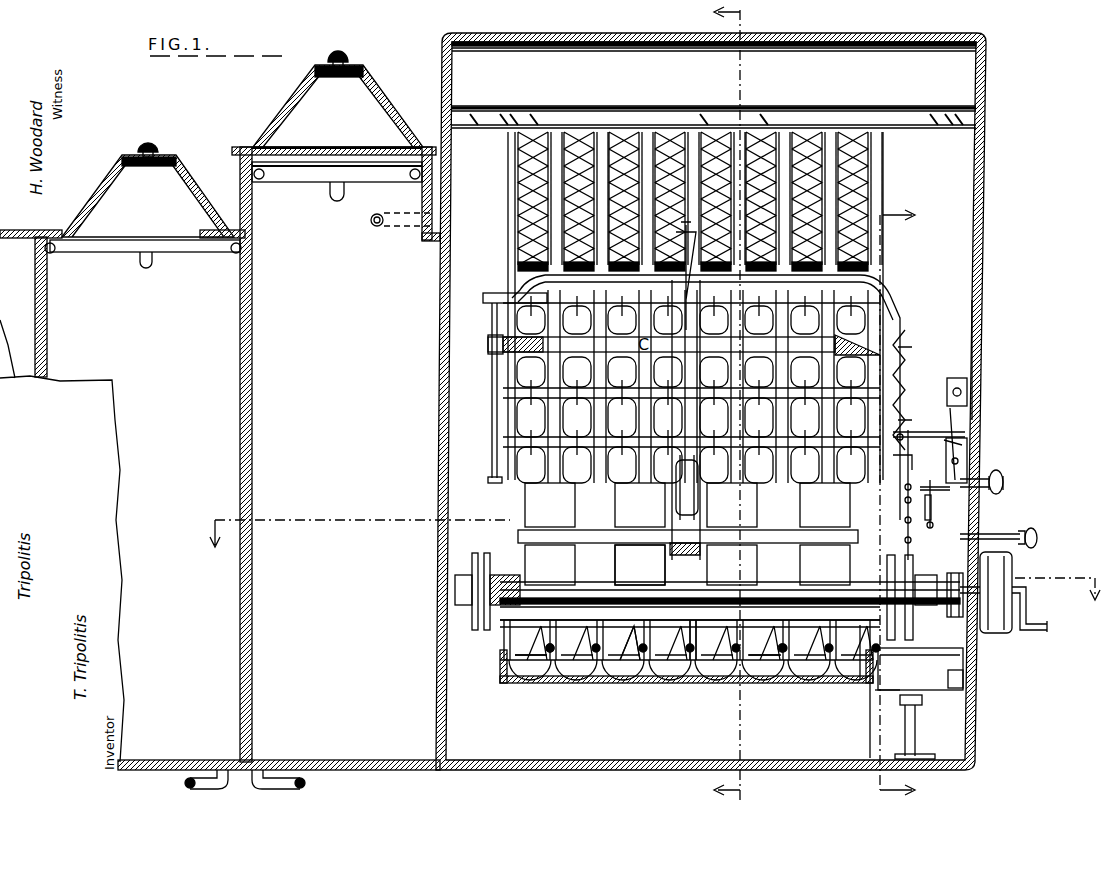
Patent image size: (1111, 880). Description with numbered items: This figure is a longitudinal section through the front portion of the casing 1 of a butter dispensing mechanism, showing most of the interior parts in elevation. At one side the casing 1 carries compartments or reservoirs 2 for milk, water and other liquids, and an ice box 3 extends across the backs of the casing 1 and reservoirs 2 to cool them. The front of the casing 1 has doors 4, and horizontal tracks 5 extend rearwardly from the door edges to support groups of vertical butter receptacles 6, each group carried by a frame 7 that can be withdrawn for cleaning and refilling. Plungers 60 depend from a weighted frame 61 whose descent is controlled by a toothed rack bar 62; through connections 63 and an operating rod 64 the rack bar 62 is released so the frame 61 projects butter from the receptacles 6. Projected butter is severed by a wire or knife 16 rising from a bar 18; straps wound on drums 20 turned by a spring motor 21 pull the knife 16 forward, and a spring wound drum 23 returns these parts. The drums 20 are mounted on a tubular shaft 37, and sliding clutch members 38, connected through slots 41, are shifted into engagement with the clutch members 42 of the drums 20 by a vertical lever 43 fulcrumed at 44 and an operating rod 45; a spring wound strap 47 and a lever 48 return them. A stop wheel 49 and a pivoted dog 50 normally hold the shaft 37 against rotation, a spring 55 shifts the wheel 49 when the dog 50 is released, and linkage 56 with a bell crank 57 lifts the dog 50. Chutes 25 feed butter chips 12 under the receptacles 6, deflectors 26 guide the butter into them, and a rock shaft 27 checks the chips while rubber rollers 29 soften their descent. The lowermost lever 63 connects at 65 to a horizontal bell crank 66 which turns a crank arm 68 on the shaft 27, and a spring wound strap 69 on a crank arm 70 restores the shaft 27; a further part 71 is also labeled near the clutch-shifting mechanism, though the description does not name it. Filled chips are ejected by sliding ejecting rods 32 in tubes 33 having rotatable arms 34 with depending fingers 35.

The casing 1 is at (975, 375).
The compartments or reservoirs 2 is at (370, 404).
The ice box 3 is at (648, 574).
The doors 4 is at (906, 506).
The horizontal tracks 5 is at (520, 531).
The butter receptacles 6 is at (694, 534).
The frame 7 is at (550, 534).
The butter chips 12 is at (862, 268).
The wire or knife 16 is at (640, 565).
The bar 18 is at (672, 620).
The drums 20 is at (468, 612).
The spring motor 21 is at (1008, 575).
The spring wound drum 23 is at (692, 455).
The chutes 25 is at (835, 218).
The deflectors 26 is at (532, 662).
The rock shaft 27 is at (884, 650).
The rubber rollers 29 is at (532, 400).
The sliding ejecting rods 32 is at (575, 660).
The tubes 33 is at (552, 662).
The rotatable arms 34 is at (522, 648).
The depending fingers 35 is at (512, 672).
The tubular shaft 37 is at (628, 616).
The sliding clutch members 38 is at (472, 578).
The slots 41 is at (468, 590).
The clutch members of the drums 42 is at (470, 600).
The vertical lever 43 is at (982, 470).
The fulcrum 44 is at (972, 506).
The operating rod 45 is at (1003, 476).
The spring wound strap 47 is at (962, 410).
The lever 48 is at (958, 432).
The stop wheel 49 is at (992, 605).
The pivoted dog 50 is at (1030, 536).
The spring 55 is at (1024, 592).
The linkage 56 is at (982, 526).
The bell crank 57 is at (1004, 486).
The plungers 60 is at (548, 414).
The weighted frame 61 is at (530, 352).
The toothed rack bar 62 is at (900, 378).
The connections or levers 63 is at (920, 488).
The operating rod 64 is at (1040, 545).
The connection 65 is at (920, 695).
The horizontal bell crank 66 is at (918, 715).
The crank arm 68 is at (866, 690).
The spring wound strap 69 is at (920, 740).
The crank arm 70 is at (887, 721).
The bracket 71 is at (965, 447).